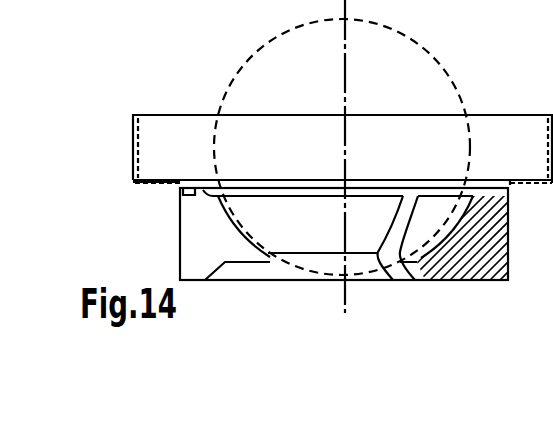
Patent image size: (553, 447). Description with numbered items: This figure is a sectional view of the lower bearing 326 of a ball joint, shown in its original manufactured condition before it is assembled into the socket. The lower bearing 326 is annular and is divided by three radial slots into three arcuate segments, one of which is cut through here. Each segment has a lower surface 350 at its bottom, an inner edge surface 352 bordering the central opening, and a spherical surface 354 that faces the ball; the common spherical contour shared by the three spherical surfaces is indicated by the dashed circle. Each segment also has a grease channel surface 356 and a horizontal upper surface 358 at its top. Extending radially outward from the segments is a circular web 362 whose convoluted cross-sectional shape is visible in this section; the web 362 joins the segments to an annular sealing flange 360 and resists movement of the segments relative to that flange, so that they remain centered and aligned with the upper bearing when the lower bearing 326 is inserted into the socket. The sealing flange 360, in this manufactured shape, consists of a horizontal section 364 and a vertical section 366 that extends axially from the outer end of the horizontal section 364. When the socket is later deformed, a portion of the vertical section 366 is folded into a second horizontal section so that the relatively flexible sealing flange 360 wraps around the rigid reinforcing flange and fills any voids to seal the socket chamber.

The lower bearing 326 is at (170, 238).
The lower surface 350 is at (233, 268).
The inner edge surface 352 is at (309, 257).
The spherical surface 354 is at (358, 218).
The grease channel surface 356 is at (288, 192).
The horizontal upper surface 358 is at (240, 182).
The sealing flange 360 is at (135, 110).
The web 362 is at (173, 181).
The horizontal section 364 is at (153, 183).
The vertical section 366 is at (133, 145).